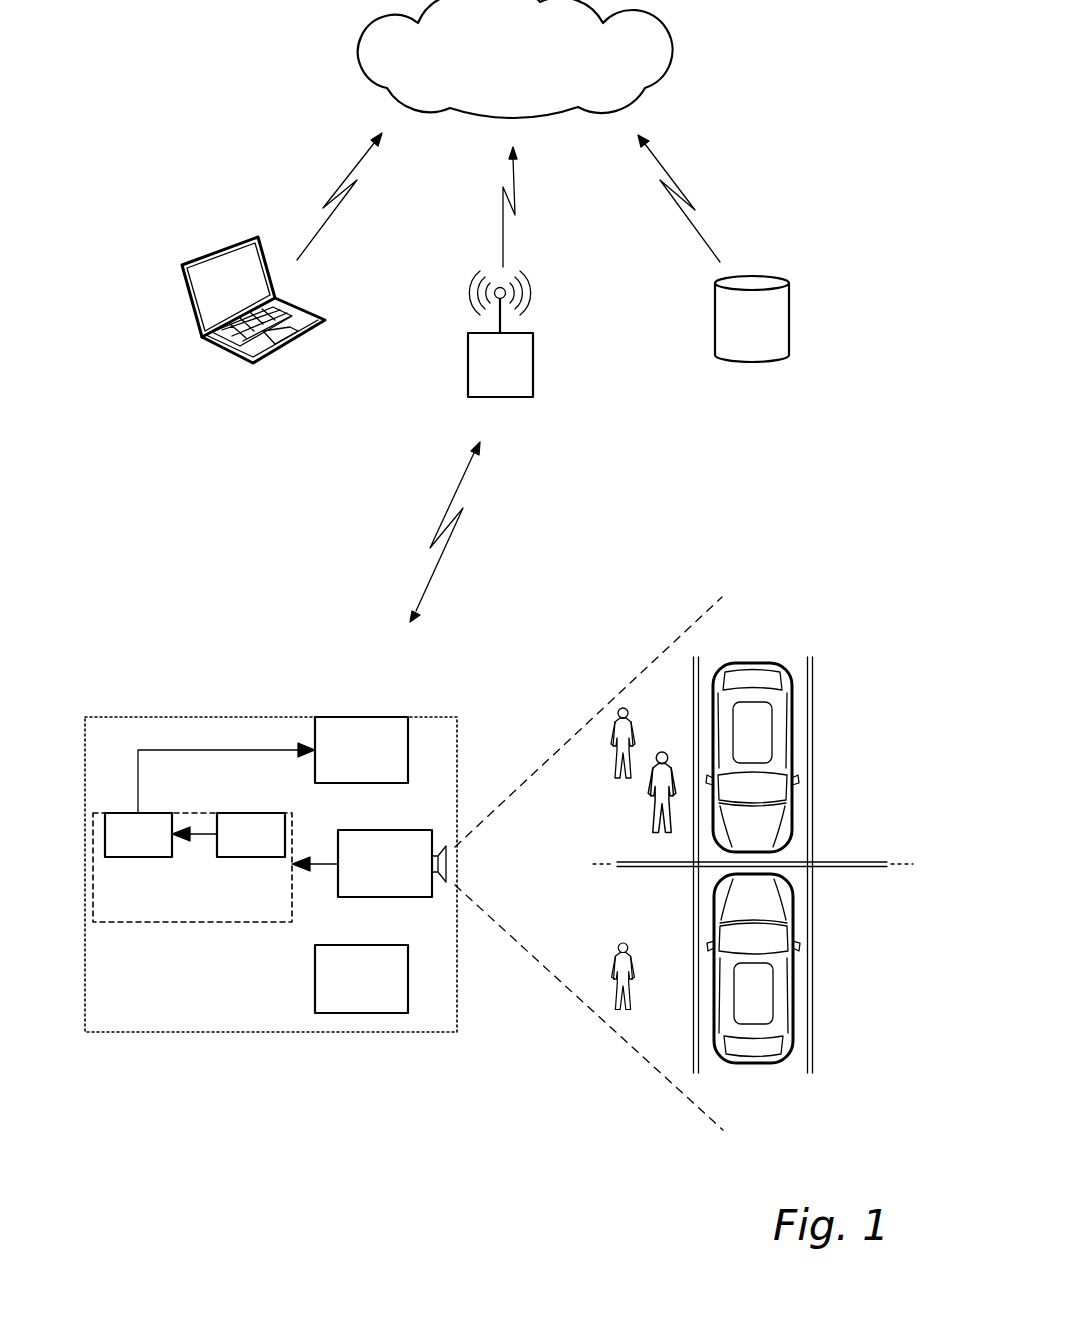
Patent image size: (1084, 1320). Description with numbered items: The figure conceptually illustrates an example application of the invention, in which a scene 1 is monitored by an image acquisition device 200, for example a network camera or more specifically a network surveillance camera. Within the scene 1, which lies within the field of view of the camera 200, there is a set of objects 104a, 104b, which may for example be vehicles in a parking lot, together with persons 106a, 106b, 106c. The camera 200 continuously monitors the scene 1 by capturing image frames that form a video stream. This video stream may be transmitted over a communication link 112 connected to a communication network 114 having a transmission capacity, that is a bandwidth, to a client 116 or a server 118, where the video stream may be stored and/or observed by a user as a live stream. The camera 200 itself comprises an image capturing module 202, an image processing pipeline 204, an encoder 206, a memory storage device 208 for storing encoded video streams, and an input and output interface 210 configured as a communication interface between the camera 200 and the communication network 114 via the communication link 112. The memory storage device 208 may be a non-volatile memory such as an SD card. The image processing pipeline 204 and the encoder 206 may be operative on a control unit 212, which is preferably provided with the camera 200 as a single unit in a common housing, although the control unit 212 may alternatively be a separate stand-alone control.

The scene 1 is at (589, 863).
The object 104a is at (752, 757).
The object 104b is at (753, 968).
The person 106a is at (618, 708).
The person 106b is at (653, 753).
The person 106c is at (610, 973).
The communication link 112 is at (500, 334).
The communication network 114 is at (515, 59).
The client 116 is at (253, 300).
The server 118 is at (752, 319).
The image acquisition device 200 is at (271, 874).
The image capturing module 202 is at (392, 863).
The image processing pipeline 204 is at (251, 835).
The encoder 206 is at (138, 835).
The memory storage device 208 is at (361, 979).
The input and output interface 210 is at (361, 750).
The control unit 212 is at (192, 867).